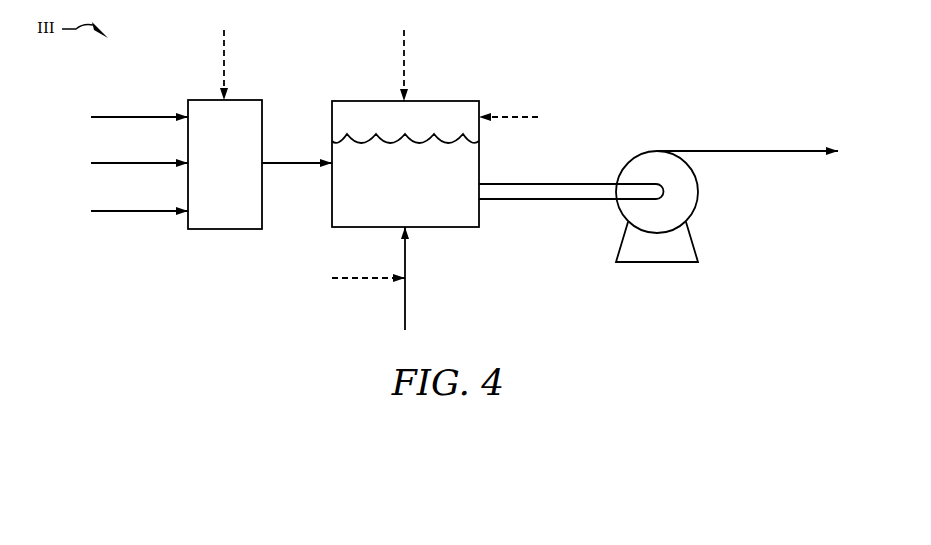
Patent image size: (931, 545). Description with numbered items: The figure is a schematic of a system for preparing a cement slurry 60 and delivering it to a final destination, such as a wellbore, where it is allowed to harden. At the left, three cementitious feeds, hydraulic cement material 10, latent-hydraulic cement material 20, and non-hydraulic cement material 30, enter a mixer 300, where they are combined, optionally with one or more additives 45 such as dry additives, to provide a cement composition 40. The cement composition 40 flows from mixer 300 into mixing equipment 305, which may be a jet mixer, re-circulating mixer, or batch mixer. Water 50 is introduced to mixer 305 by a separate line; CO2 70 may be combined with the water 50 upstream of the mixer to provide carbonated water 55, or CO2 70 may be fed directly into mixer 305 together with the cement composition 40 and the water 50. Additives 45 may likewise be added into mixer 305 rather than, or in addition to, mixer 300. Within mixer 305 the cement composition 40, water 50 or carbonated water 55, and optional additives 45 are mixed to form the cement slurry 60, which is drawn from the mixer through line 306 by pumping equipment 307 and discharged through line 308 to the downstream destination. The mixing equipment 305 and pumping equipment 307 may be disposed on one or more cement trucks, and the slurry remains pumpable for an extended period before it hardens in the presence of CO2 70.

The hydraulic cement material 10 is at (136, 117).
The latent-hydraulic cement material 20 is at (136, 163).
The non-hydraulic cement material 30 is at (136, 211).
The cement composition 40 is at (292, 161).
The additives 45 is at (228, 50).
The water 50 is at (408, 300).
The carbonated water 55 is at (408, 257).
The cement slurry 60 is at (405, 164).
The CO2 70 is at (408, 51).
The mixer 300 is at (225, 164).
The mixing equipment 305 is at (376, 101).
The line 306 is at (546, 201).
The pumping equipment 307 is at (641, 160).
The line 308 is at (752, 150).